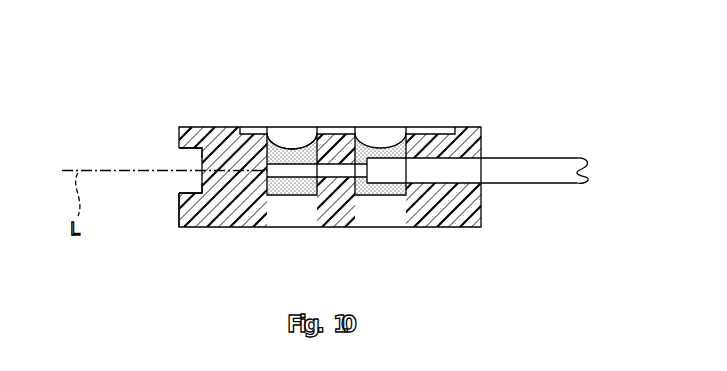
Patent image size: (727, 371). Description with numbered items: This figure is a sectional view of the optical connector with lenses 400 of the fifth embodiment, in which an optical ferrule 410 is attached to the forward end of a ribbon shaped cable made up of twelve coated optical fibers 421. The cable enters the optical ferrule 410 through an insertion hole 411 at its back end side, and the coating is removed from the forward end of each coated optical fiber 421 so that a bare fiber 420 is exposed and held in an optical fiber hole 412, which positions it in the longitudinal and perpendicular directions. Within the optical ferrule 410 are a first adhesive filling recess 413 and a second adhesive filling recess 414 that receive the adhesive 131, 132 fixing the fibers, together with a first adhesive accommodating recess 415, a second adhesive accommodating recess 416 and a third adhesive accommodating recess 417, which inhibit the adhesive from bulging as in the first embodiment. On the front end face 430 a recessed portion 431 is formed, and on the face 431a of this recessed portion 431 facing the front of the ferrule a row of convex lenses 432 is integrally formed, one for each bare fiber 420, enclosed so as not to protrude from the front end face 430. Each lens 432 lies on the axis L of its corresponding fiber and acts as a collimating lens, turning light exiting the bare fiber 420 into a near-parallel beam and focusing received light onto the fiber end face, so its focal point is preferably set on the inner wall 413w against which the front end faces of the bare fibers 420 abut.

The optical connector with lenses 400 is at (523, 113).
The optical ferrule 410 is at (185, 118).
The insertion hole 411 is at (465, 183).
The optical fiber hole 412 is at (342, 170).
The first adhesive filling recess 413 is at (298, 192).
The inner wall 413w is at (278, 138).
The second adhesive filling recess 414 is at (387, 192).
The first adhesive accommodating recess 415 is at (250, 131).
The second adhesive accommodating recess 416 is at (433, 128).
The third adhesive accommodating recess 417 is at (340, 133).
The bare fiber 420 is at (343, 173).
The coated optical fiber 421 is at (517, 170).
The front end face 430 is at (178, 128).
The recessed portion 431 is at (178, 192).
The face of the recessed portion 431a is at (178, 188).
The lens 432 is at (201, 155).
The adhesive 131 is at (368, 150).
The adhesive 132 is at (303, 148).